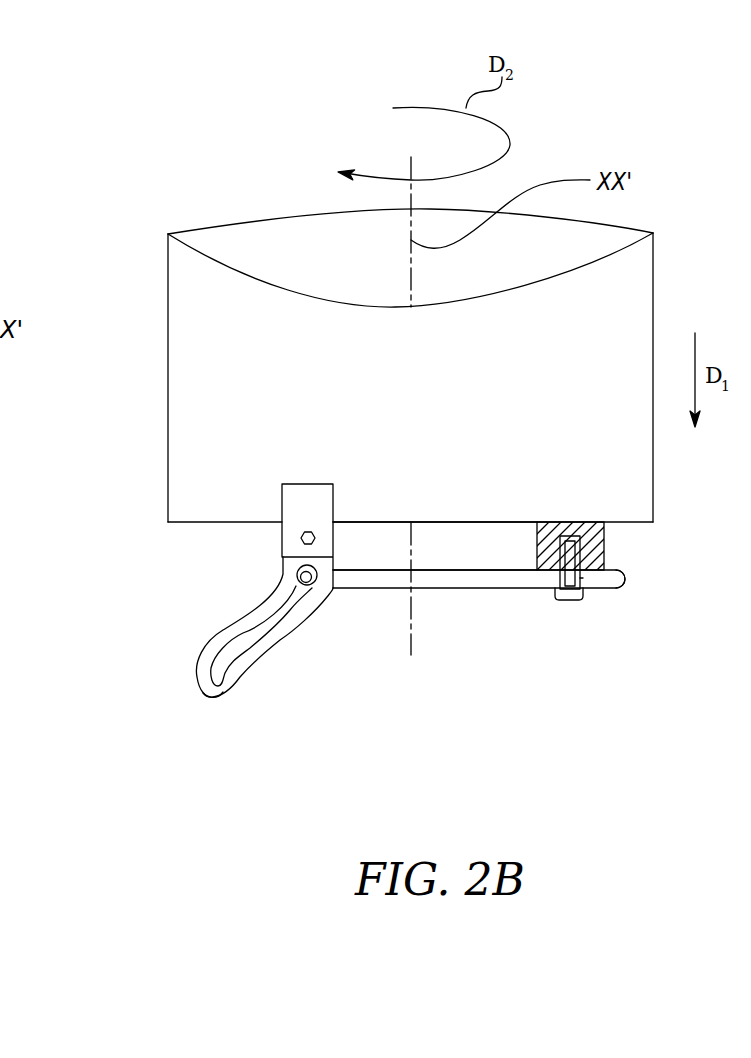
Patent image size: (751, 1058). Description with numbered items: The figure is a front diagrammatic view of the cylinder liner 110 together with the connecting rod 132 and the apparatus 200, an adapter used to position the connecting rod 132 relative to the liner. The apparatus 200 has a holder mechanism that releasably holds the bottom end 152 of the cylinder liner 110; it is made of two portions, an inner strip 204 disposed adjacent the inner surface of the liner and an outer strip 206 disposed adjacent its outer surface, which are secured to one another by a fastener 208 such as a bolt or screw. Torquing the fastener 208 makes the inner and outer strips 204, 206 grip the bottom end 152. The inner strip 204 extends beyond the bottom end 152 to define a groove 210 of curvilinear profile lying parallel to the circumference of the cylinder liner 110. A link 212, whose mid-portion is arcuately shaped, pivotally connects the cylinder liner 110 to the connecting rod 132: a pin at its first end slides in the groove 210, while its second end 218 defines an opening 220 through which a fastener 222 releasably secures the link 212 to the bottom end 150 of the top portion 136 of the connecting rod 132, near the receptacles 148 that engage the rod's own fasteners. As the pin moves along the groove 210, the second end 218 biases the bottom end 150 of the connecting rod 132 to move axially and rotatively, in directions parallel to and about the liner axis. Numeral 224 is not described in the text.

The cylinder liner 110 is at (168, 370).
The connecting rod 132 is at (606, 536).
The top portion 136 is at (612, 543).
The receptacles 148 is at (582, 550).
The bottom end 150 is at (314, 582).
The bottom end 152 is at (168, 522).
The apparatus 200 is at (137, 717).
The inner strip 204 is at (203, 650).
The outer strip 206 is at (300, 538).
The fastener 208 is at (282, 531).
The groove 210 is at (213, 688).
The link 212 is at (345, 569).
The second end 218 is at (630, 578).
The opening 220 is at (583, 578).
The fastener 222 is at (570, 601).
The gap 224 is at (441, 577).